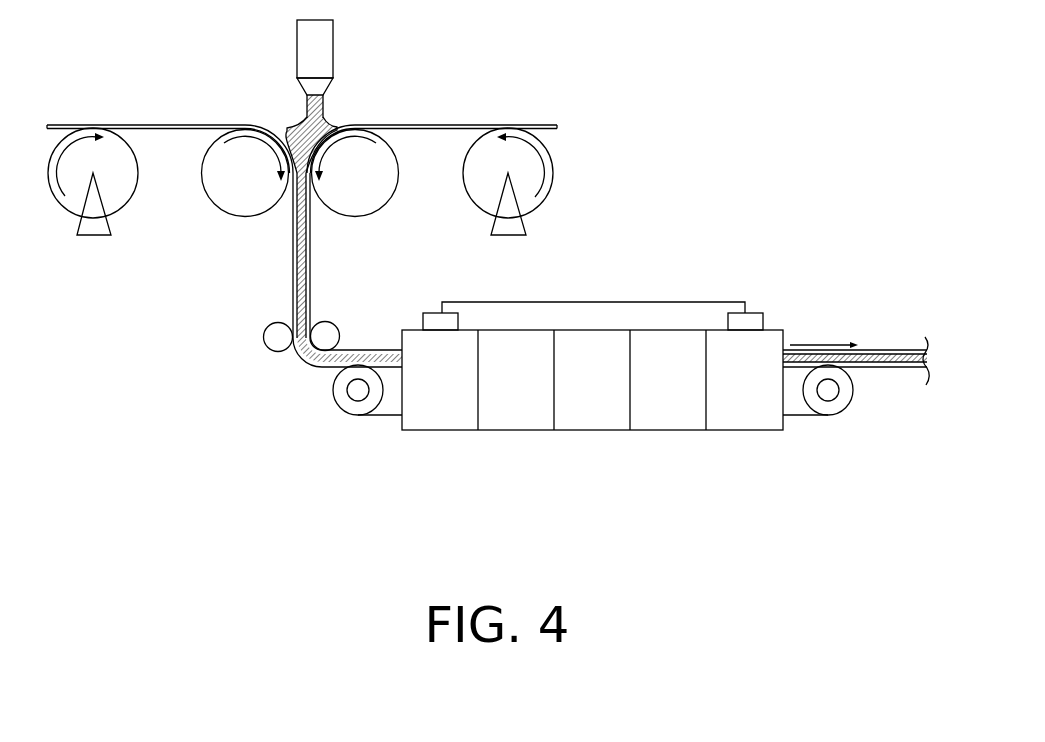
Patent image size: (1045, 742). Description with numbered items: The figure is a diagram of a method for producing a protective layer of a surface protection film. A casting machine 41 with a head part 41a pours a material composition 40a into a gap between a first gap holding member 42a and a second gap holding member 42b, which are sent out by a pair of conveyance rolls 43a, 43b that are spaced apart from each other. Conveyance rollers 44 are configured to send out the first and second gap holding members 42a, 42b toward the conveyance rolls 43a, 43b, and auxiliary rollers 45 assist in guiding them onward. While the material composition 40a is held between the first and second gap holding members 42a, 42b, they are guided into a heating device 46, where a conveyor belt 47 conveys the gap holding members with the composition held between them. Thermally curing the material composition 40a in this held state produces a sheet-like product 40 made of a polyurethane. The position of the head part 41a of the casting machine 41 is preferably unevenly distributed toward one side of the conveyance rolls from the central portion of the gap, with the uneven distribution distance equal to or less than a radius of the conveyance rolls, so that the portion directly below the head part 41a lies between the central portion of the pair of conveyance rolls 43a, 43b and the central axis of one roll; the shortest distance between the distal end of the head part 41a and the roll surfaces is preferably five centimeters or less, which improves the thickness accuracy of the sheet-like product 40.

The sheet-like product 40 is at (893, 368).
The material composition 40a is at (303, 122).
The casting machine 41 is at (322, 48).
The head part 41a is at (333, 88).
The first gap holding member 42a is at (178, 123).
The second gap holding member 42b is at (432, 123).
The conveyance roll 43a is at (237, 214).
The conveyance roll 43b is at (370, 203).
The conveyance roller 44 is at (123, 198).
The auxiliary roller 45 is at (274, 340).
The heating device 46 is at (667, 423).
The conveyor belt 47 is at (348, 414).